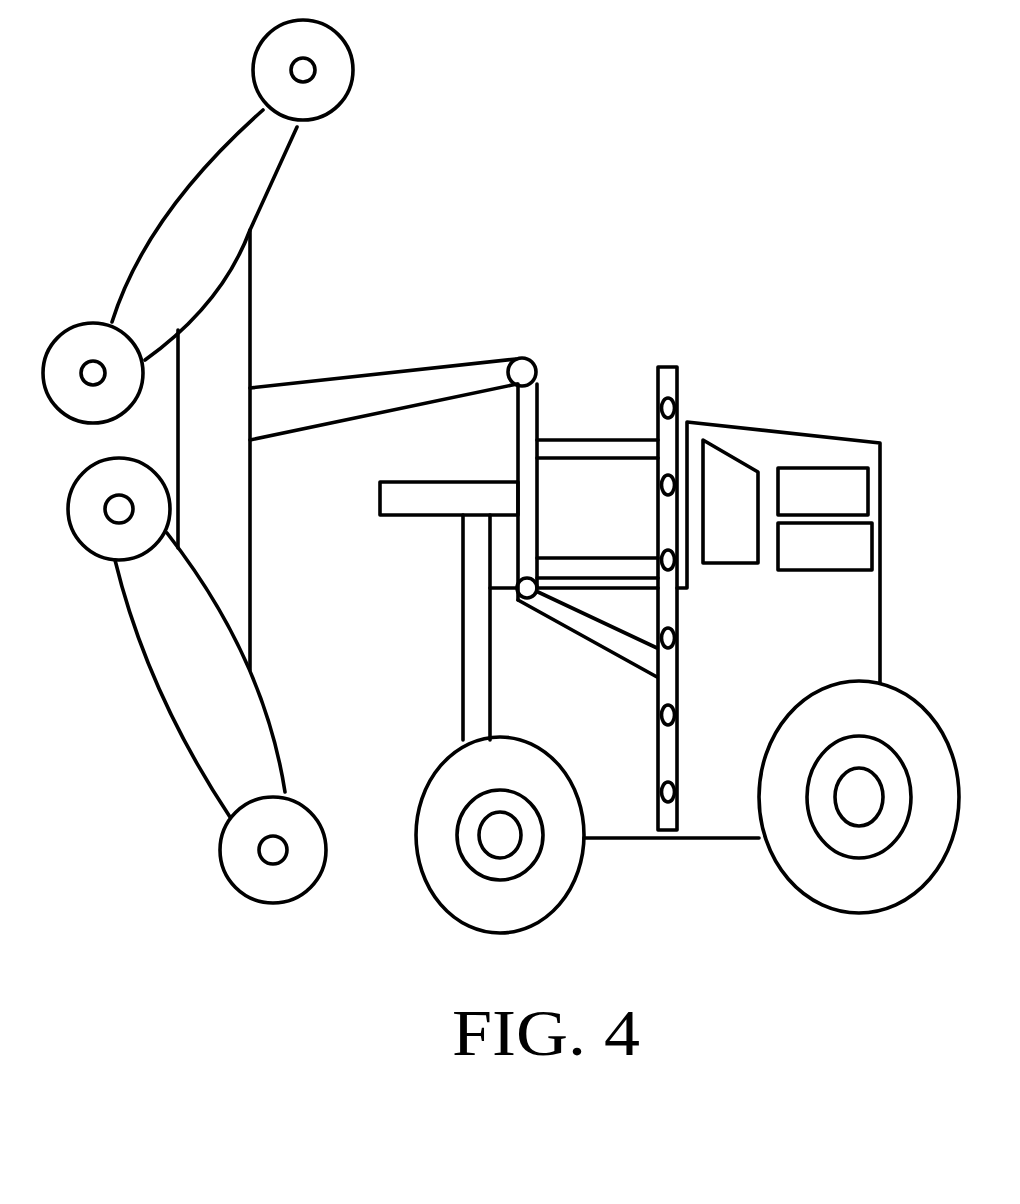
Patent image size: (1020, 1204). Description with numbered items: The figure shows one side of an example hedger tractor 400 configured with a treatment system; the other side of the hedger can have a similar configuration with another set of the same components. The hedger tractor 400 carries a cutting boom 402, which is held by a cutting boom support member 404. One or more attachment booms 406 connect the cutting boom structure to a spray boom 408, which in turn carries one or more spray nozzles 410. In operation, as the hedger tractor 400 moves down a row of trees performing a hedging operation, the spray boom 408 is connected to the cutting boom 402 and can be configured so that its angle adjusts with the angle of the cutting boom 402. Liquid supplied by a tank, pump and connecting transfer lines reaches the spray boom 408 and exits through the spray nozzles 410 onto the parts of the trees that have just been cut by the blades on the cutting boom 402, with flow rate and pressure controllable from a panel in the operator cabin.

The hedger tractor 400 is at (706, 120).
The cutting boom 402 is at (319, 287).
The cutting boom support member 404 is at (551, 384).
The attachment boom 406 is at (596, 480).
The spray boom 408 is at (684, 348).
The spray nozzle 410 is at (694, 704).